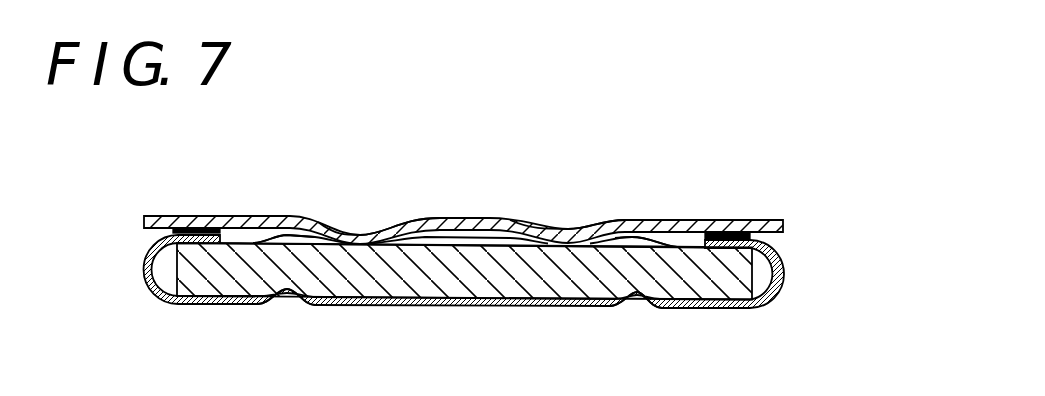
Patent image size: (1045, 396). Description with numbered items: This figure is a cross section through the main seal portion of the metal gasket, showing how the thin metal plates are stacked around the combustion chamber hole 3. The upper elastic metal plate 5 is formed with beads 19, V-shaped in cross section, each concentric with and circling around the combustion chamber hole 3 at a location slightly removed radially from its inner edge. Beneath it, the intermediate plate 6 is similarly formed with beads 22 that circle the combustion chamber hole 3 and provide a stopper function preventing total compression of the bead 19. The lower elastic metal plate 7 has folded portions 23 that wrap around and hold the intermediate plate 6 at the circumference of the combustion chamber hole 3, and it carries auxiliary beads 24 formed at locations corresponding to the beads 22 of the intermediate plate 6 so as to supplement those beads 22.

The combustion chamber hole 3 is at (143, 221).
The elastic metal plate 5 is at (247, 217).
The intermediate plate 6 is at (440, 273).
The elastic metal plate 7 is at (503, 308).
The bead 19 is at (370, 233).
The bead 22 is at (289, 240).
The folded portion 23 is at (195, 228).
The auxiliary bead 24 is at (286, 297).